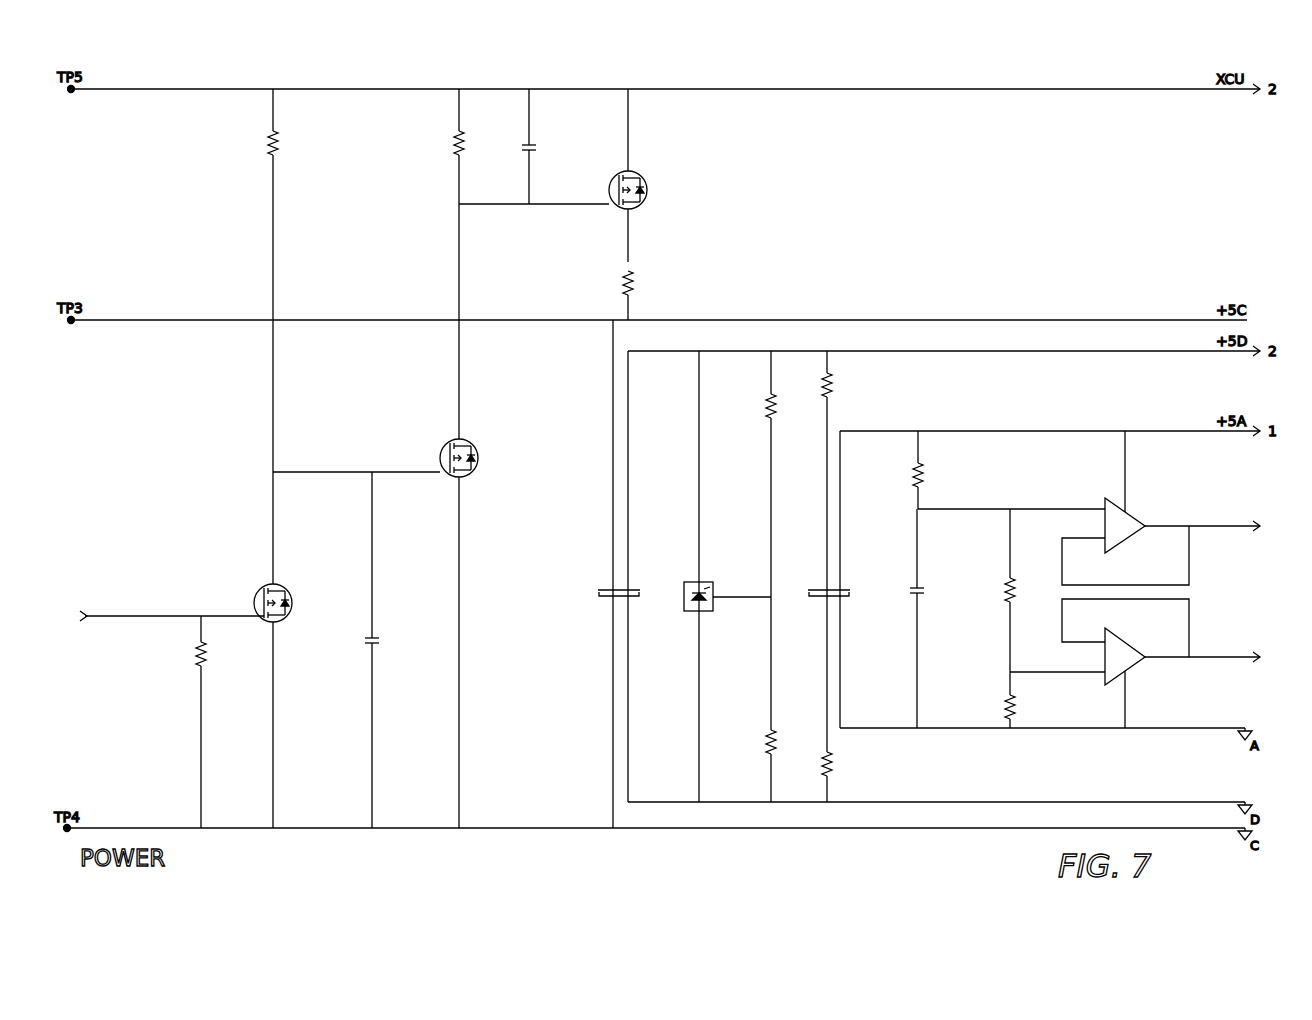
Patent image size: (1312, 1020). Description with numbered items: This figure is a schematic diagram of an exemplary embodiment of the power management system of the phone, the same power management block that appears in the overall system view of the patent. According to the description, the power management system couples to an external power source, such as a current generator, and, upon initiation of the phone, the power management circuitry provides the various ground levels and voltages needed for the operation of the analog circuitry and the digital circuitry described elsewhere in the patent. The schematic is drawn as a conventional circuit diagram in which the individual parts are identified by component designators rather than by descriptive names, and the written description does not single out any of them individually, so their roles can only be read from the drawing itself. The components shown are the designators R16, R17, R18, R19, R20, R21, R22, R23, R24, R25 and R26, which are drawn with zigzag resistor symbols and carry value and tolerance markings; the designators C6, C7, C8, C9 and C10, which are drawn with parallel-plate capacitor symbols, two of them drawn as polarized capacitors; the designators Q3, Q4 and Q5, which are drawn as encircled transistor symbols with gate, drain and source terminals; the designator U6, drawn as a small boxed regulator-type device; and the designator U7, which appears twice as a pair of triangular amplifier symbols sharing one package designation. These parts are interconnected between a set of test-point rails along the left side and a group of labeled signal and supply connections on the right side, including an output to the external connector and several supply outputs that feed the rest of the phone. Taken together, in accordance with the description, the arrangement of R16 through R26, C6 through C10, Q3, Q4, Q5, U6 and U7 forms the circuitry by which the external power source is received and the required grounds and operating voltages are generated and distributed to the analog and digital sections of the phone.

The resistor 100K 5% R16 is at (210, 722).
The resistor 10K 5% R17 is at (278, 336).
The resistor 1M0 5% R18 is at (464, 264).
The resistor 49R9 1% R19 is at (637, 287).
The resistor 25K 0.1% R20 is at (768, 540).
The resistor 25K 0.1% R21 is at (768, 765).
The resistor 1R0 R22 is at (842, 470).
The resistor 1R0 R23 is at (842, 696).
The resistor 10K 0.1% R24 is at (917, 470).
The resistor 20K 0.1% R25 is at (1006, 602).
The resistor 20K 0.1% R26 is at (1006, 710).
The capacitor 10N0 C6 is at (394, 650).
The capacitor 10N0 C7 is at (550, 146).
The capacitor 33U C8 is at (636, 589).
The capacitor 33U C9 is at (848, 589).
The capacitor 10N0 C10 is at (936, 618).
The MOSFET BSS138 Q3 is at (208, 603).
The MOSFET BSS138 Q4 is at (481, 458).
The MOSFET NDS0605 Q5 is at (656, 175).
The voltage reference LM431 U6 is at (727, 576).
The operational amplifier OPA2350 U7 is at (1169, 579).